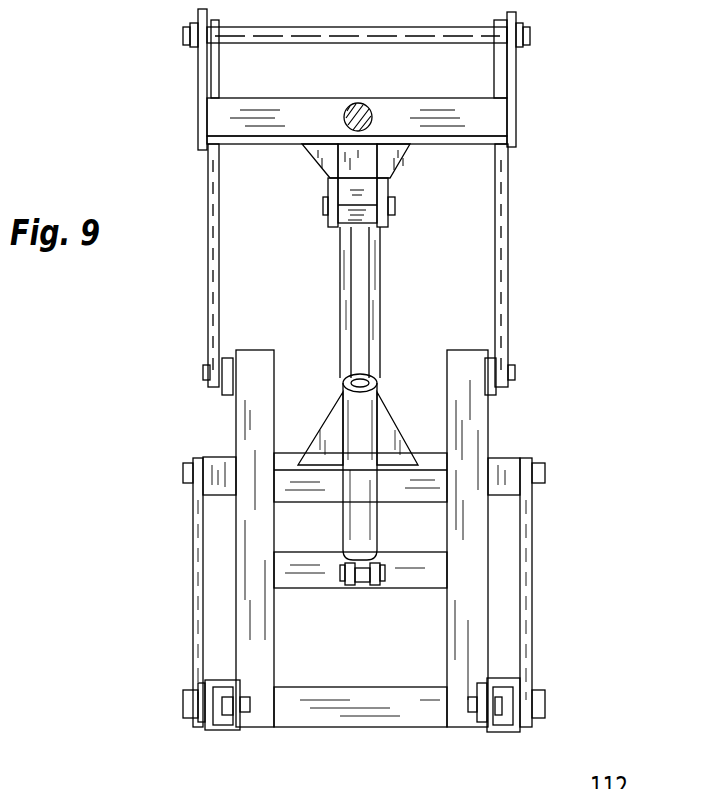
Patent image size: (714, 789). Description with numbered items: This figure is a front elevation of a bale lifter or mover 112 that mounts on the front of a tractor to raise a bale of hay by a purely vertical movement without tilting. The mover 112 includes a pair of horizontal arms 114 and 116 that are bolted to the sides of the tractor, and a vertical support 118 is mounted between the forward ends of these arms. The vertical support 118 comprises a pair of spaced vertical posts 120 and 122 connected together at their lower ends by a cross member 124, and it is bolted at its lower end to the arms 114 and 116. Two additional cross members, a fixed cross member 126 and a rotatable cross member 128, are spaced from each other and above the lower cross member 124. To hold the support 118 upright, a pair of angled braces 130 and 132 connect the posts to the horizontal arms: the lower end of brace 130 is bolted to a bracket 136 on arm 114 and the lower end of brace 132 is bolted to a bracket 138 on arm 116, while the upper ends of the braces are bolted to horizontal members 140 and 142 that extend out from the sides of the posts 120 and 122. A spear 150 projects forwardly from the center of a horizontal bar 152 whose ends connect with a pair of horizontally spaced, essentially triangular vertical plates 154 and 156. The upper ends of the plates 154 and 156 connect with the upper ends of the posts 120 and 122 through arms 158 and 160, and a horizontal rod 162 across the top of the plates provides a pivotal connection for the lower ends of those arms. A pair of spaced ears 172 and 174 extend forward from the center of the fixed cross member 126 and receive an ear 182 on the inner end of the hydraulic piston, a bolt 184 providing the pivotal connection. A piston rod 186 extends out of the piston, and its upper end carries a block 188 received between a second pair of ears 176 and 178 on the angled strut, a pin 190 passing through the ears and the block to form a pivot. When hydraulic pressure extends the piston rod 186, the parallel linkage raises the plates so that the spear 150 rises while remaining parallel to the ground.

The bale lifter or mover 112 is at (155, 451).
The horizontal arm 114 is at (220, 730).
The horizontal arm 116 is at (498, 732).
The vertical support 118 is at (478, 430).
The vertical post 120 is at (274, 632).
The vertical post 122 is at (447, 650).
The cross member 124 is at (348, 728).
The cross member 126 is at (408, 560).
The cross member 128 is at (308, 492).
The angled arm or brace 130 is at (193, 560).
The angled arm or brace 132 is at (532, 552).
The bracket 136 is at (198, 692).
The bracket 138 is at (520, 690).
The horizontal member 140 is at (214, 460).
The horizontal member 142 is at (520, 458).
The spear 150 is at (357, 103).
The horizontal bar 152 is at (262, 108).
The vertical plate 154 is at (198, 99).
The vertical plate 156 is at (516, 78).
The arm 158 is at (208, 182).
The arm 160 is at (508, 174).
The horizontal rod 162 is at (372, 31).
The ear 172 is at (350, 588).
The ear 174 is at (385, 588).
The ear 176 is at (328, 215).
The ear 178 is at (388, 226).
The ear 182 is at (361, 588).
The bolt 184 is at (358, 467).
The piston rod 186 is at (358, 302).
The block 188 is at (347, 225).
The pin 190 is at (395, 206).